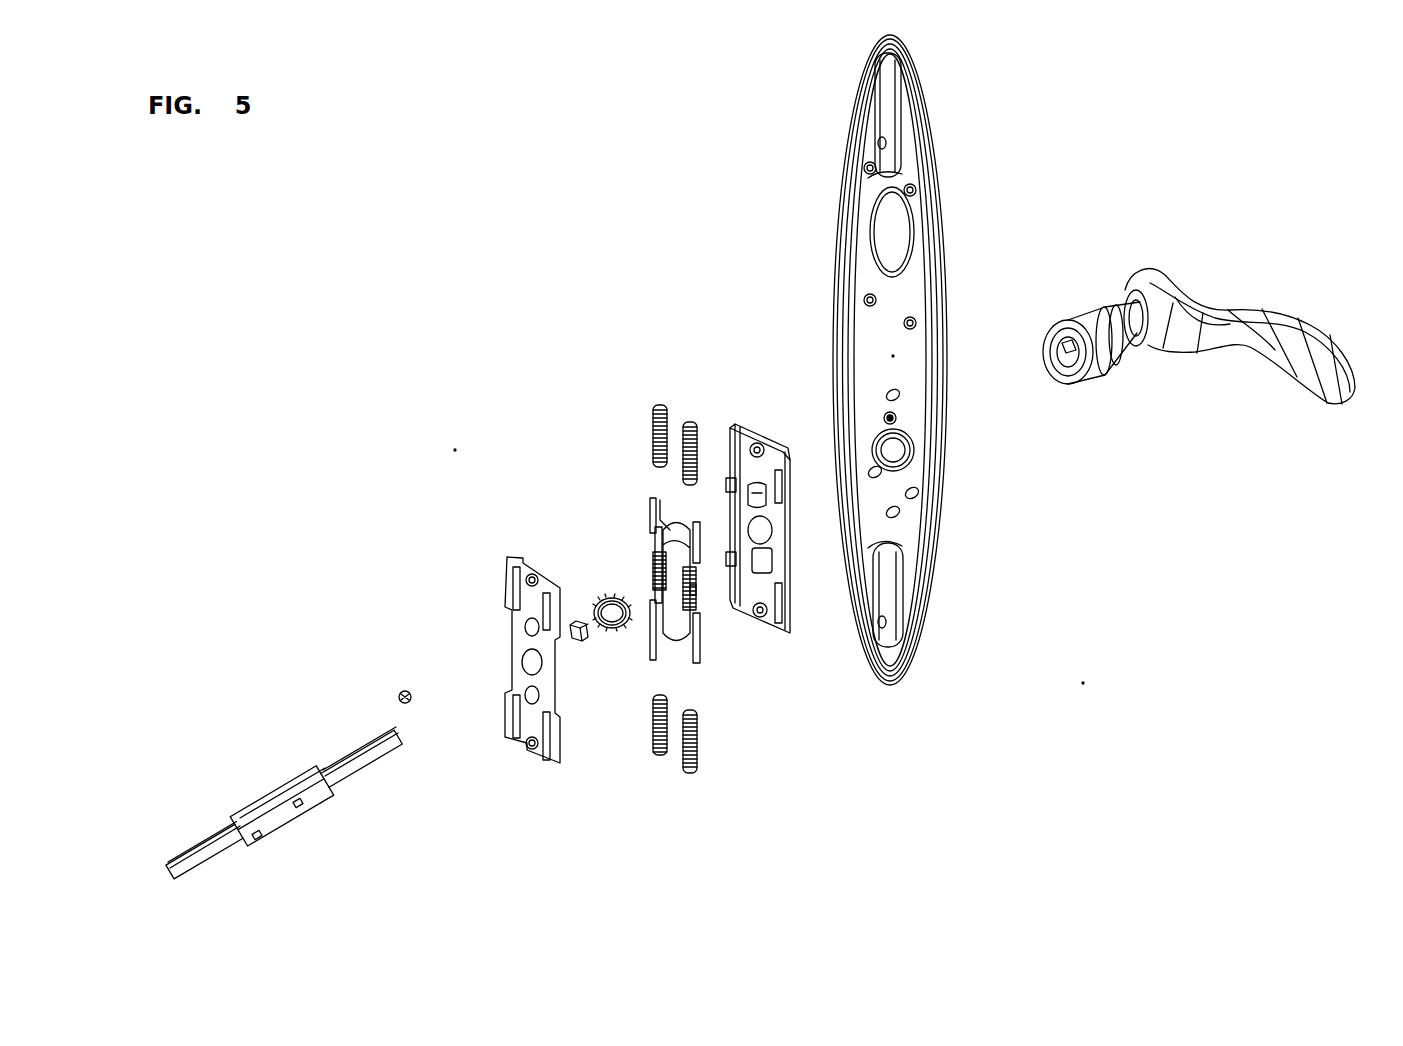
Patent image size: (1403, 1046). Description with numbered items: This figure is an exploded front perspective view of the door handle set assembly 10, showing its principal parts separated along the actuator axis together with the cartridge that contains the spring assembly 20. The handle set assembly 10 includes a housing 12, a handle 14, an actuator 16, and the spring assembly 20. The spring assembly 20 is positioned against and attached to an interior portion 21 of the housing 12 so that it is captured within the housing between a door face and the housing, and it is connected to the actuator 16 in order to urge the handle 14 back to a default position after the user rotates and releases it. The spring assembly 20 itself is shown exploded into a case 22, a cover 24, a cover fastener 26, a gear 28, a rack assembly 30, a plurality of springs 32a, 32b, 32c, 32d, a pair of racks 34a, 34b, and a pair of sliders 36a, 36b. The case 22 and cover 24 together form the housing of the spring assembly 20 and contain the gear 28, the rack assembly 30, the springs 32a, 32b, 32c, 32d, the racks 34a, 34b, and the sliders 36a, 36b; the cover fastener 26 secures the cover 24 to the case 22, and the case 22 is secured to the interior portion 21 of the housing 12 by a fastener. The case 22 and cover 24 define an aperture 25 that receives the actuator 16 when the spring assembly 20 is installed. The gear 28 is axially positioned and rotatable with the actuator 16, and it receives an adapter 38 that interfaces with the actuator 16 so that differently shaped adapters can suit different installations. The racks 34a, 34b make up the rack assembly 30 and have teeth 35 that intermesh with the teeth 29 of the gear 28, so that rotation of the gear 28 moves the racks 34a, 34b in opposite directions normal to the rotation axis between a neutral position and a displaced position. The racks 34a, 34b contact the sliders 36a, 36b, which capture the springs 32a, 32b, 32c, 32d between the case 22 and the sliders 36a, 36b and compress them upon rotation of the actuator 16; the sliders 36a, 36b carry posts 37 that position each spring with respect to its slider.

The handle set assembly 10 is at (1088, 688).
The housing 12 is at (935, 252).
The handle 14 is at (1258, 318).
The actuator 16 is at (268, 803).
The spring assembly 20 is at (452, 448).
The interior portion 21 is at (895, 355).
The case 22 is at (742, 432).
The cover 24 is at (505, 590).
The aperture 25 is at (532, 663).
The cover fastener 26 is at (402, 690).
The gear 28 is at (603, 600).
The teeth 29 is at (608, 598).
The rack assembly 30 is at (622, 508).
The spring 32a is at (656, 405).
The spring 32b is at (691, 423).
The spring 32c is at (657, 756).
The spring 32d is at (692, 774).
The rack 34a is at (655, 570).
The rack 34b is at (700, 603).
The teeth 35 is at (692, 588).
The slider 36a is at (651, 500).
The slider 36b is at (654, 605).
The posts 37 is at (660, 518).
The adapter 38 is at (583, 645).